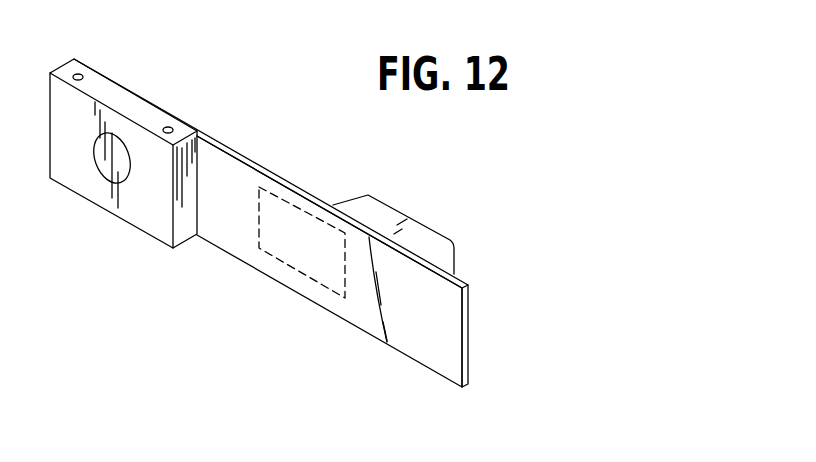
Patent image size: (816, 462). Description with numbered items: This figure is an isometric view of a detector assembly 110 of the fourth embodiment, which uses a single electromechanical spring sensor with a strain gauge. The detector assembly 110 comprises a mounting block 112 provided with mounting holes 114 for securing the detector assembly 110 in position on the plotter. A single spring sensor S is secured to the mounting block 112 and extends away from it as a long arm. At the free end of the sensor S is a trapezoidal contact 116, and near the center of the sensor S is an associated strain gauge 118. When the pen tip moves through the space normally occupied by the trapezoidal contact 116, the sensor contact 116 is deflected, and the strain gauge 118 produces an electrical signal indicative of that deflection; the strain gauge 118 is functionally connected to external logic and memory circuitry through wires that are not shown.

The detector assembly 110 is at (271, 215).
The mounting block 112 is at (157, 216).
The mounting holes 114 is at (167, 127).
The trapezoidal contact 116 is at (435, 250).
The strain gauge 118 is at (293, 260).
The spring sensor S is at (430, 353).